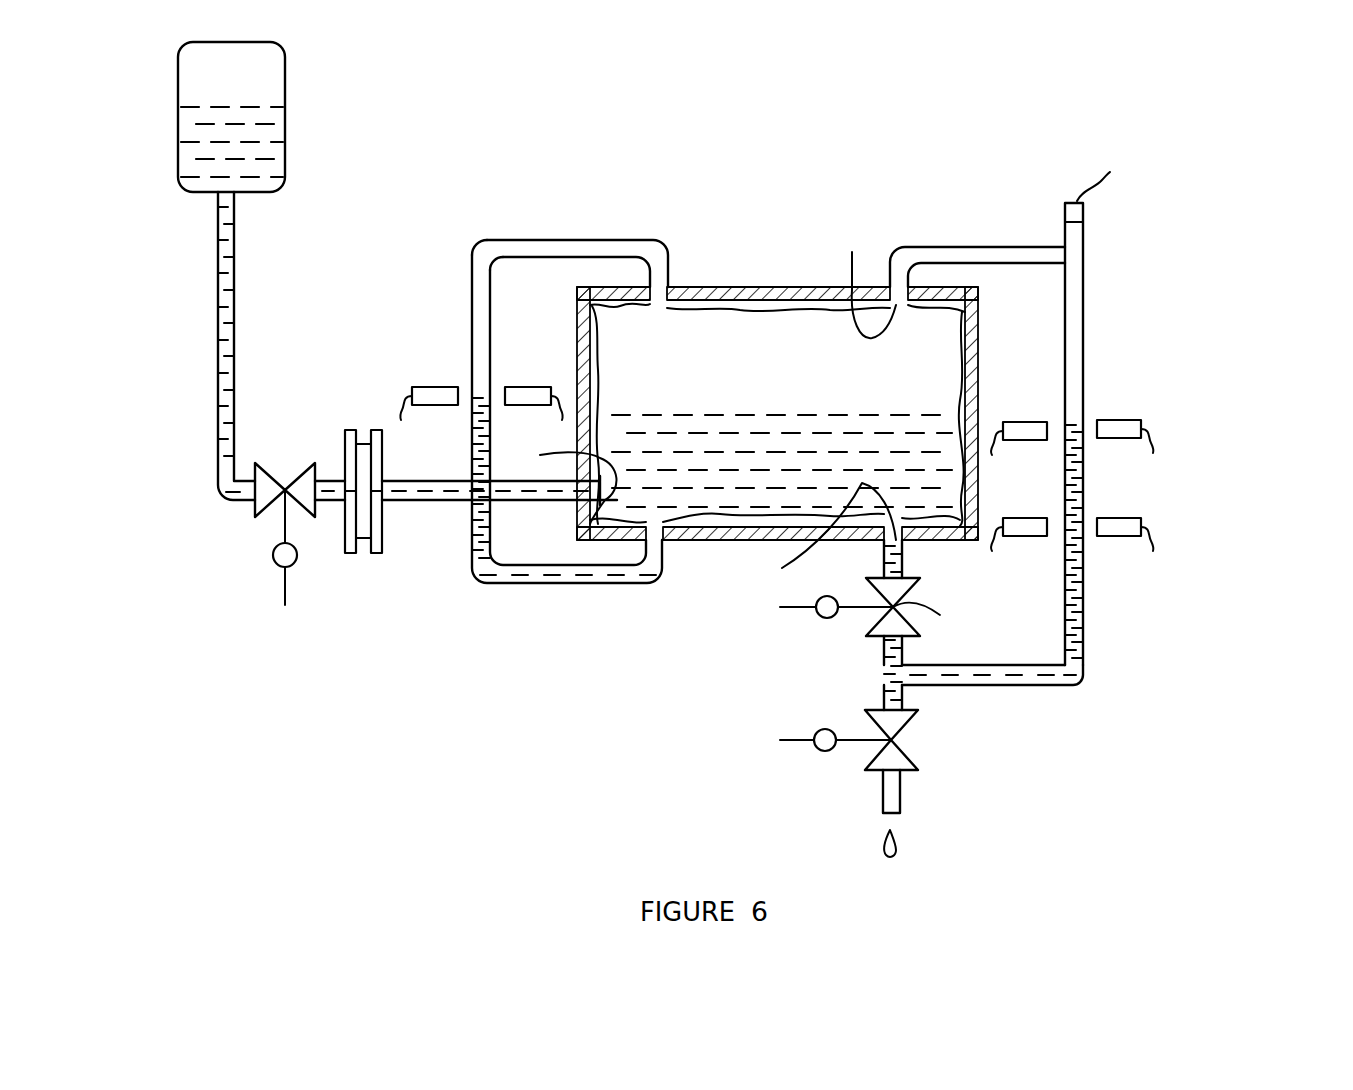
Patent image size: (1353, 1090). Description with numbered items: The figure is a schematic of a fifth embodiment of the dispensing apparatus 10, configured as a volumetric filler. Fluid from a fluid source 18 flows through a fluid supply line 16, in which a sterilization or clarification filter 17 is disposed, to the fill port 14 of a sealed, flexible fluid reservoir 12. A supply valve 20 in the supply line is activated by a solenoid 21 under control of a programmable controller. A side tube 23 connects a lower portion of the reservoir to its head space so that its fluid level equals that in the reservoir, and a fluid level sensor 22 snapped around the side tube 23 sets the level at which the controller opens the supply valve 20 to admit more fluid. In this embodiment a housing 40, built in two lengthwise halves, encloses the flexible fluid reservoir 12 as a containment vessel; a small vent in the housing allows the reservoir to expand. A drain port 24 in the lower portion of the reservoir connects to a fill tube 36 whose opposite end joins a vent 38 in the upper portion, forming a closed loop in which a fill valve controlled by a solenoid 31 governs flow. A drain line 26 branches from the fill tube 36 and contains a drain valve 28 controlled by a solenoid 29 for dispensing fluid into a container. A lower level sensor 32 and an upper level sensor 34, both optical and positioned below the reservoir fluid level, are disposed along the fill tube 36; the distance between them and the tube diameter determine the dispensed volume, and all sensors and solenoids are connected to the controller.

The dispensing apparatus 10 is at (983, 133).
The fluid reservoir 12 is at (762, 325).
The fill port 14 is at (544, 486).
The fluid supply line 16 is at (235, 283).
The sterilization or clarification filter 17 is at (383, 535).
The fluid source 18 is at (262, 73).
The supply valve 20 is at (298, 482).
The solenoid 21 is at (272, 556).
The fluid level sensor 22 is at (433, 398).
The side tube 23 is at (574, 250).
The drain port 24 is at (822, 596).
The drain line 26 is at (900, 797).
The drain valve 28 is at (892, 762).
The solenoid 29 is at (823, 752).
The solenoid 31 is at (820, 618).
The lower level sensor 32 is at (1115, 535).
The upper level sensor 34 is at (1118, 430).
The fill tube 36 is at (1078, 660).
The vent 38 is at (867, 280).
The housing 40 is at (707, 287).